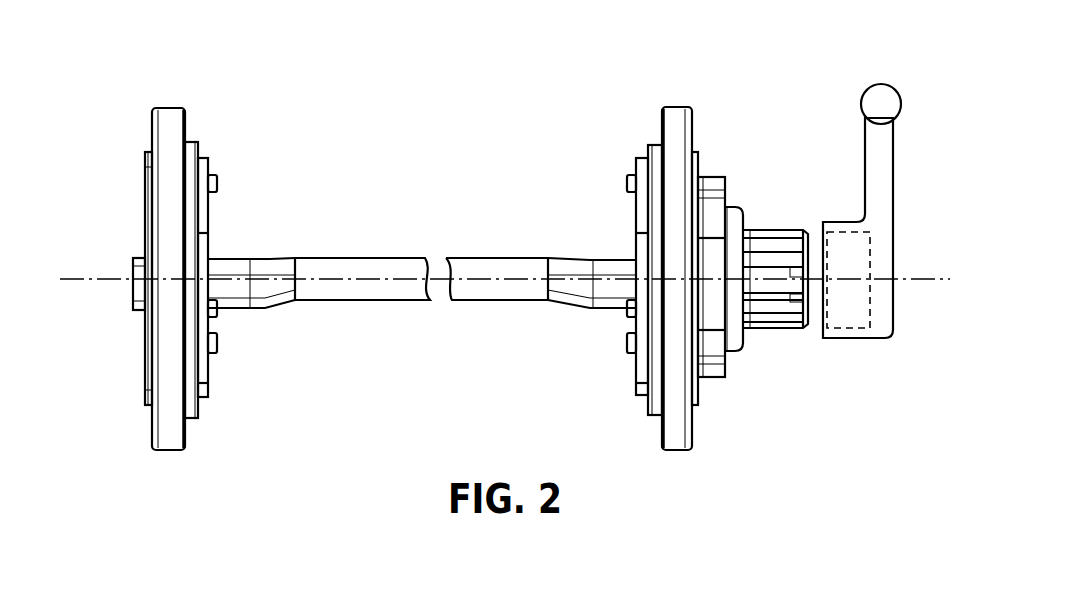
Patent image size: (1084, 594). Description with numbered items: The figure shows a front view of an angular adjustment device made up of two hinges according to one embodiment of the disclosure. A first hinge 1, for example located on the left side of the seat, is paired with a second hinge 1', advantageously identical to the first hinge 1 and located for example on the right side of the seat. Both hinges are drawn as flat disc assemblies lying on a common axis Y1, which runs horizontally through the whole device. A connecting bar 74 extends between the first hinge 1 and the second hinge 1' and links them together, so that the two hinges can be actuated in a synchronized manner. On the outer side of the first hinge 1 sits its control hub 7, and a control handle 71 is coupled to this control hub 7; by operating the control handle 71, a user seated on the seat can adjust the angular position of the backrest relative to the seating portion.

The first hinge 1 is at (656, 249).
The second hinge 1' is at (207, 252).
The control hub 7 is at (760, 330).
The control handle 71 is at (885, 98).
The connecting bar 74 is at (353, 303).
The axis of rotation Y1 is at (82, 280).